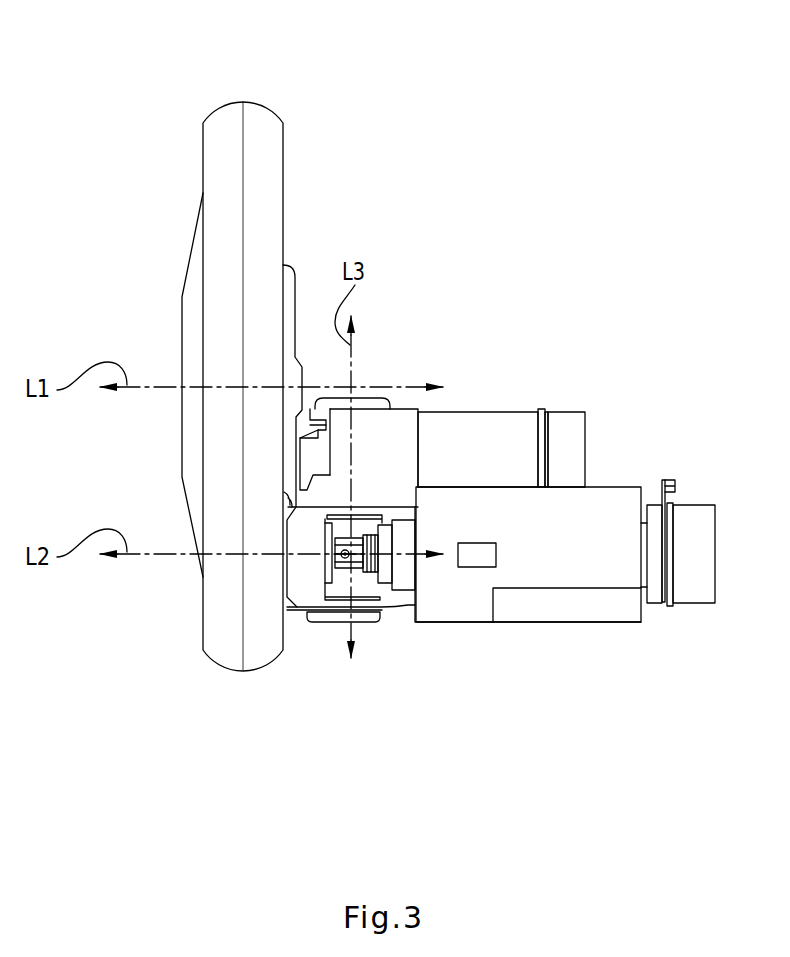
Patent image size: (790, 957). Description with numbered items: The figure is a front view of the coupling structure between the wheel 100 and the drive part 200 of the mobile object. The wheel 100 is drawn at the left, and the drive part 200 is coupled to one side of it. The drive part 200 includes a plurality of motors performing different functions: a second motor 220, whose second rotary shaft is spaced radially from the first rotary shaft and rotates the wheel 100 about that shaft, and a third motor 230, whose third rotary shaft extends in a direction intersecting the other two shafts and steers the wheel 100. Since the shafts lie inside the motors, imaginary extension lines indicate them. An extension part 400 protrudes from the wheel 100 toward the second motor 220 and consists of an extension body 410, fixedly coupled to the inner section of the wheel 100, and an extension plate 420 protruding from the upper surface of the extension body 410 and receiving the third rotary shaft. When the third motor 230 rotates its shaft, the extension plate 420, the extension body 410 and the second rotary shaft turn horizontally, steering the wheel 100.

The wheel 100 is at (243, 93).
The drive part 200 is at (499, 484).
The second motor 220 is at (563, 568).
The third motor 230 is at (488, 432).
The extension part 400 is at (349, 635).
The extension body 410 is at (302, 572).
The extension plate 420 is at (367, 510).